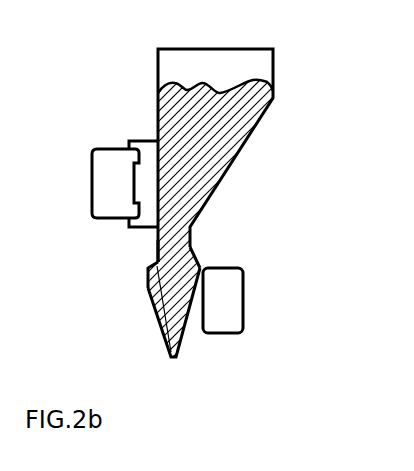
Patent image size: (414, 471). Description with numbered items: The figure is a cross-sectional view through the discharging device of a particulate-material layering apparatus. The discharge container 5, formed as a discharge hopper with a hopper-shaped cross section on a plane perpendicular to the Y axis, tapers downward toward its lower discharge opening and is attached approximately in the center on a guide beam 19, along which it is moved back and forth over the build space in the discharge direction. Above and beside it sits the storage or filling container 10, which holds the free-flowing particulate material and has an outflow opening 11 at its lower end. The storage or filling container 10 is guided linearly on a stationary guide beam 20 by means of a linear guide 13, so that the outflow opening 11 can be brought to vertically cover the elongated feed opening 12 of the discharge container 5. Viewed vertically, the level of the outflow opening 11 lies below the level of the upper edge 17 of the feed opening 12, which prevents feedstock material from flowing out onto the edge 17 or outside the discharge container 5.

The storage or filling container 10 is at (268, 67).
The outflow opening 11 is at (187, 253).
The discharge container 5 is at (172, 307).
The upper edge 17 is at (148, 270).
The feed opening 12 is at (154, 261).
The linear guide 13 is at (148, 150).
The guide beam 20 is at (109, 160).
The guide beam 19 is at (235, 302).